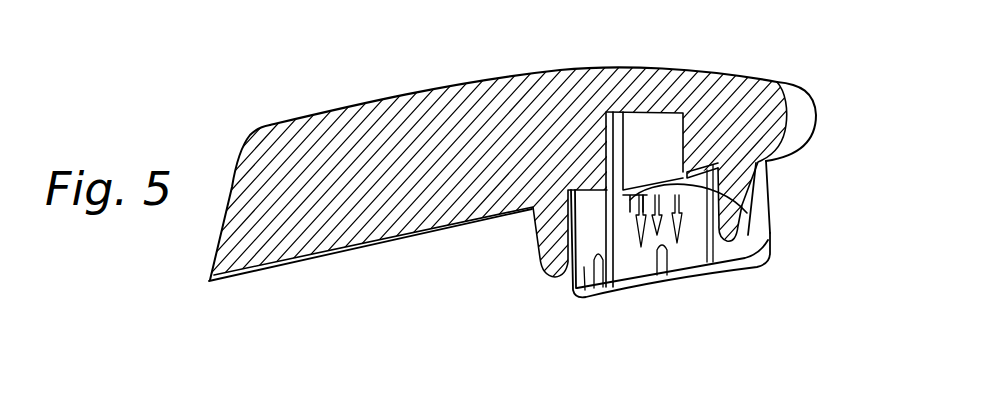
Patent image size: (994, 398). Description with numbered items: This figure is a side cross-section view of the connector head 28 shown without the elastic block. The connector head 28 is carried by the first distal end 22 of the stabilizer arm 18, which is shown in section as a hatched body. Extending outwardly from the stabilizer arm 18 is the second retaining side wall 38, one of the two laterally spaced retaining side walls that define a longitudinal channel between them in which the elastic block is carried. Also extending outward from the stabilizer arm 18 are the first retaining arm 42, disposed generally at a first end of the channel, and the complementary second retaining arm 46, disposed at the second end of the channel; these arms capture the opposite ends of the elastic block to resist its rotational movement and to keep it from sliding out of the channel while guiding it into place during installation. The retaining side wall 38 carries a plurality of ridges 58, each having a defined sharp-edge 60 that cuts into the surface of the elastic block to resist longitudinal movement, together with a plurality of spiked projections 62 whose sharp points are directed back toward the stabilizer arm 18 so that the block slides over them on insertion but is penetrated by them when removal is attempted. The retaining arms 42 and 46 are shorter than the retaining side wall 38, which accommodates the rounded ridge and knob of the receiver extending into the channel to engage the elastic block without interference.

The stabilizer arm 18 is at (268, 125).
The first distal end 22 is at (648, 68).
The connector head 28 is at (781, 185).
The first retaining arm 42 is at (764, 211).
The second retaining arm 46 is at (537, 243).
The second retaining side wall 38 is at (583, 288).
The sharp-edge 60 is at (596, 290).
The ridges 58 is at (610, 230).
The spiked projections 62 is at (748, 214).